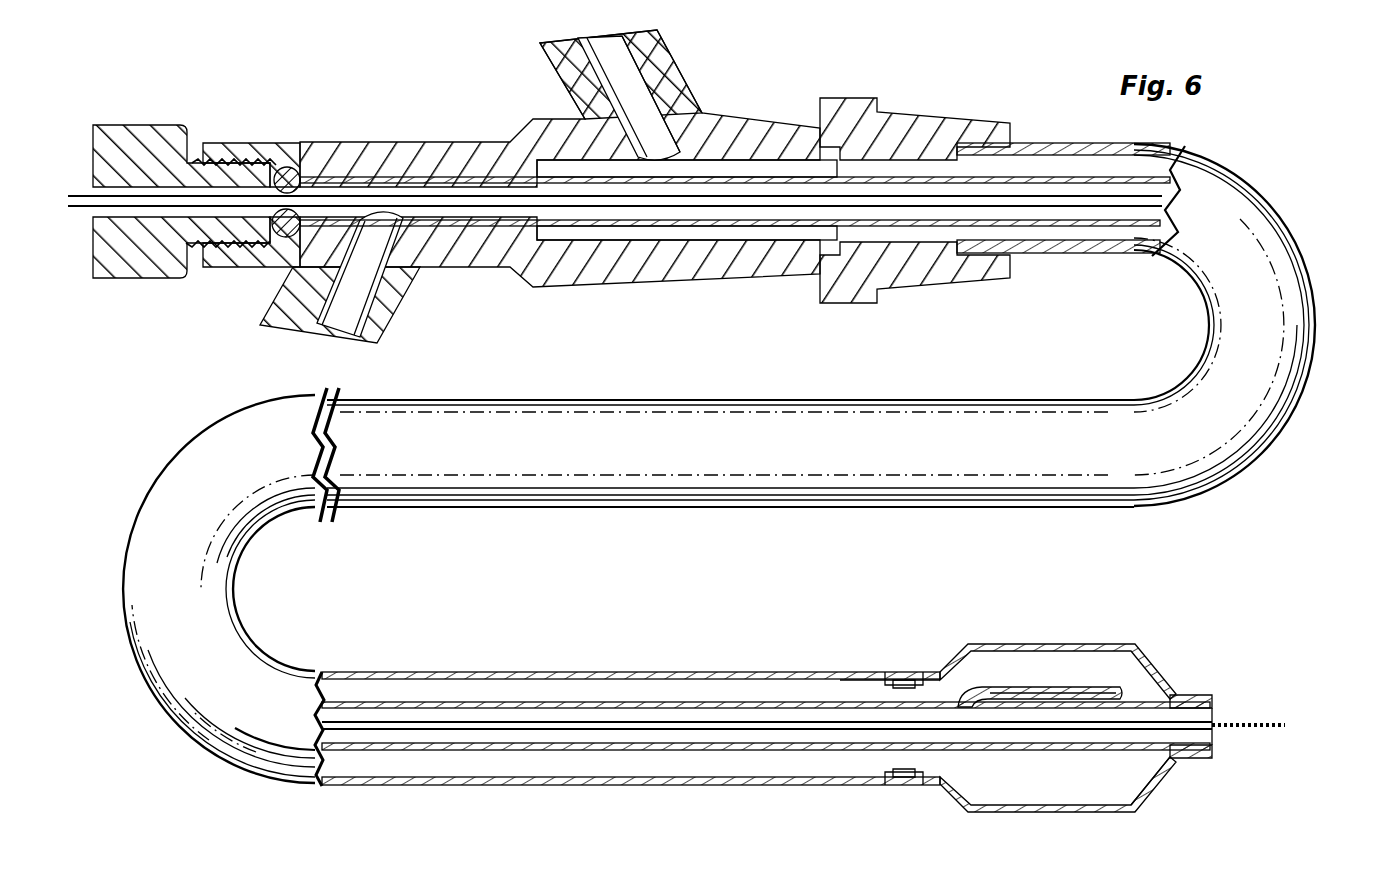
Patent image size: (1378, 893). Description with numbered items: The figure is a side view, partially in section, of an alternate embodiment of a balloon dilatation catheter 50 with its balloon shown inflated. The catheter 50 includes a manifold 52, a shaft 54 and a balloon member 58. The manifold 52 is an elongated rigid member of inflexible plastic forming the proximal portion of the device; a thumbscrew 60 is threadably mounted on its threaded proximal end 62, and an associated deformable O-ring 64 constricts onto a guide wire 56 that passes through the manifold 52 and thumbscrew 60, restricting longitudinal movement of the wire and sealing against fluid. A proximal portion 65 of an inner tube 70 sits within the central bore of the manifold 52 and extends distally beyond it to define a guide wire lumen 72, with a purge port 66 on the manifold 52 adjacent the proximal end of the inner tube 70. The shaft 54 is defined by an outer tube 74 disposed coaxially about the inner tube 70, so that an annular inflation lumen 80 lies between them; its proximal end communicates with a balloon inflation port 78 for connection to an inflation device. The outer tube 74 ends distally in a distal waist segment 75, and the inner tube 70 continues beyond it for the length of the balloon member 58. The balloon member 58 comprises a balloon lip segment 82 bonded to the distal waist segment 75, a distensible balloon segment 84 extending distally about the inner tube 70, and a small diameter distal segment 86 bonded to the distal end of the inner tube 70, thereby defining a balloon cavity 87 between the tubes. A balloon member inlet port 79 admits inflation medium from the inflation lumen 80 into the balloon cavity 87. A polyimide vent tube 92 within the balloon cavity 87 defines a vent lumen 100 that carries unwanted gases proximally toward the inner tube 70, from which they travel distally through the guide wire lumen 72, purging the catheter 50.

The catheter 50 is at (1330, 282).
The manifold 52 is at (262, 108).
The shaft 54 is at (931, 395).
The guide wire 56 is at (356, 200).
The balloon member 58 is at (1078, 646).
The thumbscrew 60 is at (138, 122).
The threaded proximal end 62 is at (219, 143).
The O-ring 64 is at (291, 166).
The proximal portion 65 is at (468, 176).
The purge port 66 is at (322, 338).
The inner tube 70 is at (745, 228).
The guide wire lumen 72 is at (694, 215).
The outer tube 74 is at (1112, 406).
The distal waist segment 75 is at (909, 682).
The balloon inflation port 78 is at (597, 50).
The balloon member inlet port 79 is at (902, 697).
The inflation lumen 80 is at (356, 690).
The balloon lip segment 82 is at (910, 787).
The distensible balloon segment 84 is at (1053, 815).
The small diameter distal segment 86 is at (1200, 698).
The balloon cavity 87 is at (1022, 782).
The vent tube 92 is at (1068, 689).
The vent lumen 100 is at (1027, 690).